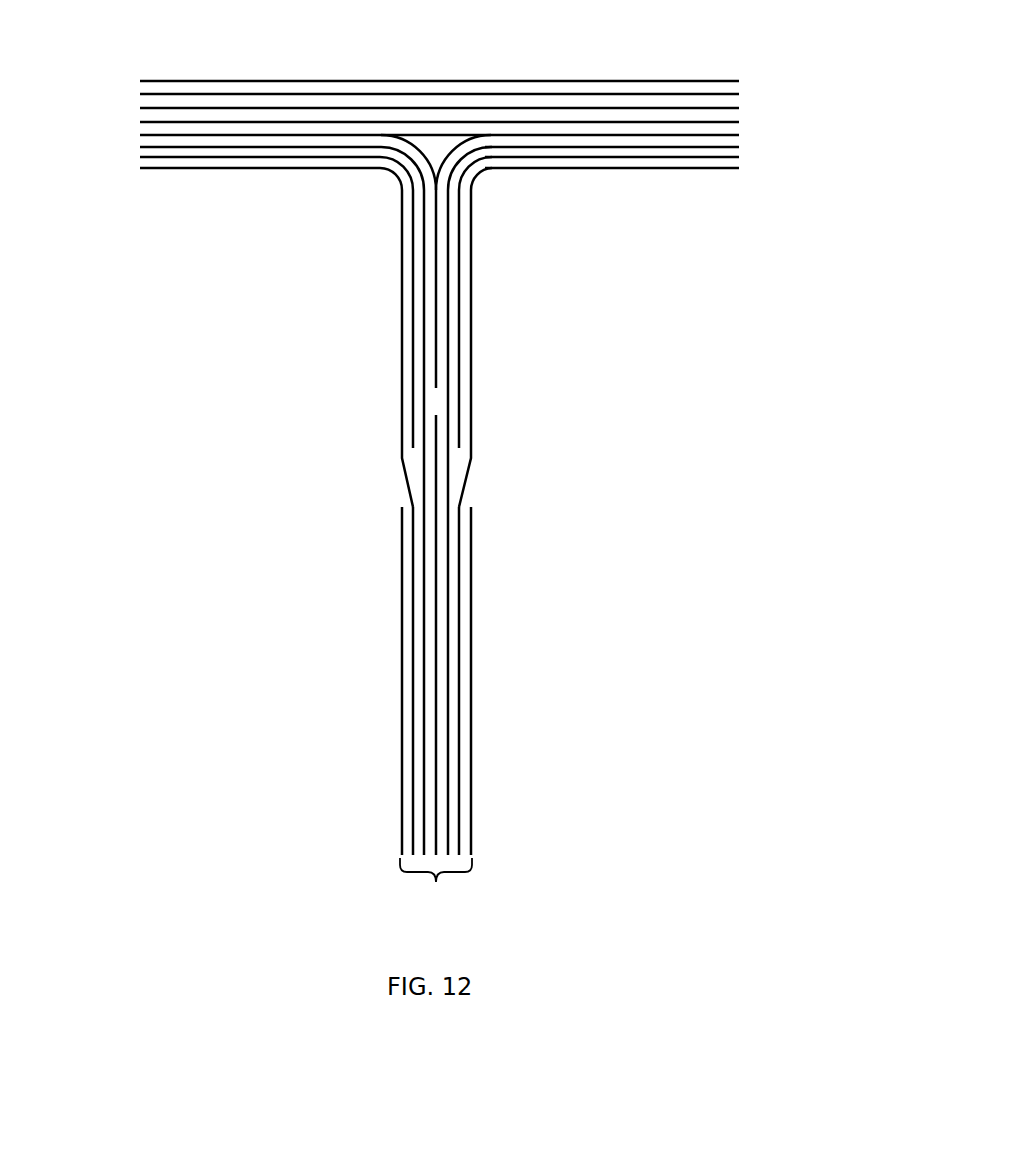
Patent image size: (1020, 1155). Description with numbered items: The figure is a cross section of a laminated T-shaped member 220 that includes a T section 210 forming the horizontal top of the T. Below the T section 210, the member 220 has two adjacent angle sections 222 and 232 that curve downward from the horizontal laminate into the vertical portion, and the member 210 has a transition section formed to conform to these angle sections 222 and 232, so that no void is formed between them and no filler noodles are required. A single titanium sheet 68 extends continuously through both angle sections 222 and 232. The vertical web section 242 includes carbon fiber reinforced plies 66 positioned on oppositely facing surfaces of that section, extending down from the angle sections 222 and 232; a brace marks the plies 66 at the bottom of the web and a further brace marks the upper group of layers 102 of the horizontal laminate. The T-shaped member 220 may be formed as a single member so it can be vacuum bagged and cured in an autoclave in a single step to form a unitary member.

The first group of layers 102 is at (139, 81).
The T section 210 is at (746, 134).
The titanium sheet 68 is at (138, 157).
The angle section 222 is at (355, 222).
The angle section 232 is at (510, 222).
The T-shaped member 220 is at (158, 460).
The web section 242 is at (484, 665).
The carbon fiber reinforced plies 66 is at (436, 888).